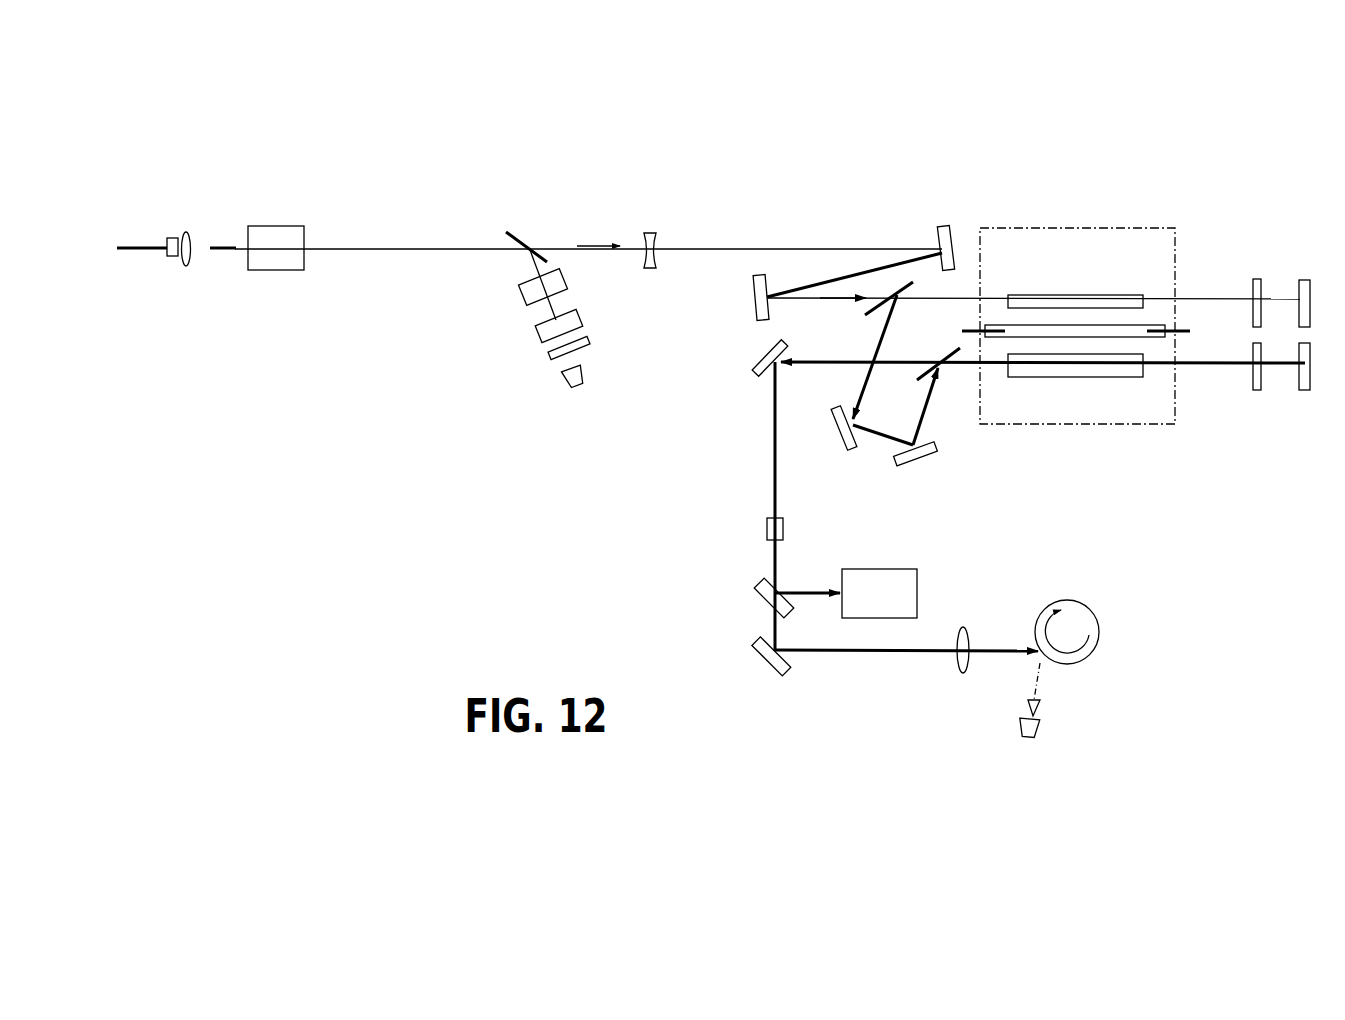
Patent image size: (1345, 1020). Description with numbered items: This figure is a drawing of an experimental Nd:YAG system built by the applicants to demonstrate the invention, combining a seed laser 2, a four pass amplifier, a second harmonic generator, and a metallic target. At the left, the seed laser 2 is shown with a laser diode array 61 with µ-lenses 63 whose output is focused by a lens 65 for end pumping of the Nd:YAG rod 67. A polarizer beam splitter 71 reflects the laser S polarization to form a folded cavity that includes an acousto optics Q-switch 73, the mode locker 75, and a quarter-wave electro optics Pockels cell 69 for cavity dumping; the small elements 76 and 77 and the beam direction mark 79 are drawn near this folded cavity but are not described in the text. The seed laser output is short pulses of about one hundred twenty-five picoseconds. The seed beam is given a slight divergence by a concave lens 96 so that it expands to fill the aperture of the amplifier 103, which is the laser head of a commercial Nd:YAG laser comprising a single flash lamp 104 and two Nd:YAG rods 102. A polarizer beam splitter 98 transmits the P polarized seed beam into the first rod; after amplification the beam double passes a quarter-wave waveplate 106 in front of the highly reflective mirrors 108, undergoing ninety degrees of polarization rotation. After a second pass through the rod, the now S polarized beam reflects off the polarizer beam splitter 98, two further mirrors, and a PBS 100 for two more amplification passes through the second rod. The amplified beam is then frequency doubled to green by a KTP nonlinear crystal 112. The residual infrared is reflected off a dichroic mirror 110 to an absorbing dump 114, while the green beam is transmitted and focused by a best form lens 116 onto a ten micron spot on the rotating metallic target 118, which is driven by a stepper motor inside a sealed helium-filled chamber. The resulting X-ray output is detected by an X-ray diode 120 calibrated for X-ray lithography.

The seed laser 2 is at (376, 322).
The laser diode array 61 is at (184, 209).
The µ-lenses 63 is at (172, 236).
The lens 65 is at (186, 266).
The Nd:YAG rod 67 is at (222, 244).
The λ/4 electro optics Pockels cell 69 is at (275, 271).
The polarizer beam splitter 71 is at (517, 235).
The acousto optics Q-switch 73 is at (518, 295).
The mode locker 75 is at (537, 337).
The detector 76 is at (565, 378).
The filter 77 is at (588, 337).
The beam direction 79 is at (597, 232).
The concave lens 96 is at (653, 233).
The polarizer beam splitter 98 is at (905, 288).
The PBS 100 is at (961, 343).
The Nd:YAG rods 102 is at (1123, 353).
The amplifier 103 is at (1116, 469).
The flash lamp 104 is at (1062, 323).
The λ/4 waveplate 106 is at (1253, 314).
The mirrors 108 is at (1300, 353).
The dichroic mirror 110 is at (762, 582).
The KTP nonlinear crystal 112 is at (785, 530).
The absorbing surface (dump) 114 is at (898, 568).
The best form lens 116 is at (960, 673).
The metallic target 118 is at (1047, 600).
The X-ray diode 120 is at (1040, 730).